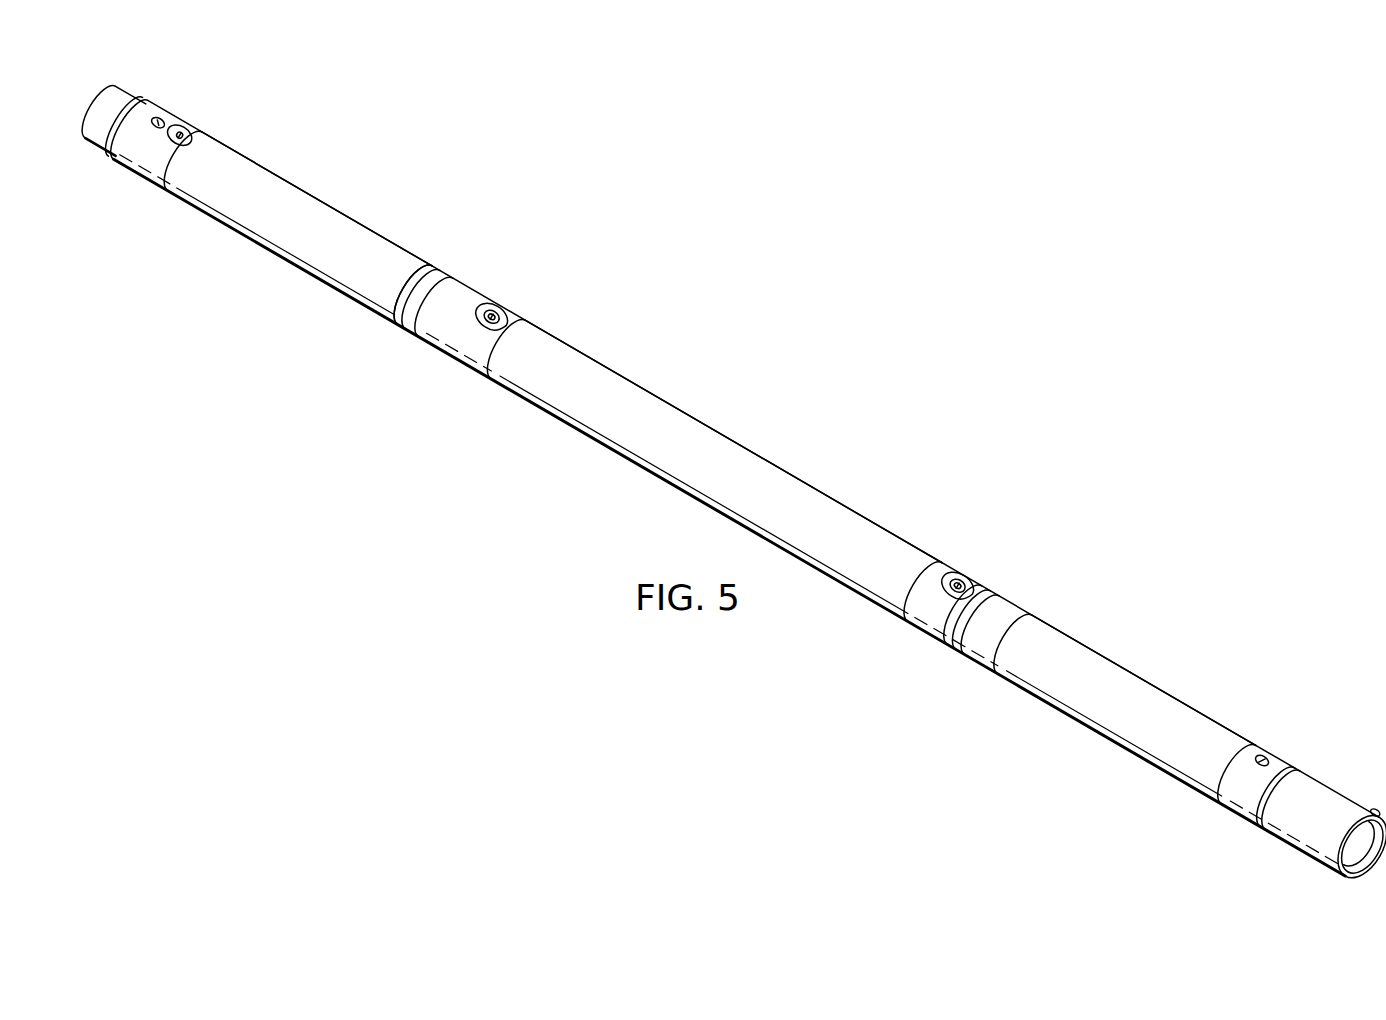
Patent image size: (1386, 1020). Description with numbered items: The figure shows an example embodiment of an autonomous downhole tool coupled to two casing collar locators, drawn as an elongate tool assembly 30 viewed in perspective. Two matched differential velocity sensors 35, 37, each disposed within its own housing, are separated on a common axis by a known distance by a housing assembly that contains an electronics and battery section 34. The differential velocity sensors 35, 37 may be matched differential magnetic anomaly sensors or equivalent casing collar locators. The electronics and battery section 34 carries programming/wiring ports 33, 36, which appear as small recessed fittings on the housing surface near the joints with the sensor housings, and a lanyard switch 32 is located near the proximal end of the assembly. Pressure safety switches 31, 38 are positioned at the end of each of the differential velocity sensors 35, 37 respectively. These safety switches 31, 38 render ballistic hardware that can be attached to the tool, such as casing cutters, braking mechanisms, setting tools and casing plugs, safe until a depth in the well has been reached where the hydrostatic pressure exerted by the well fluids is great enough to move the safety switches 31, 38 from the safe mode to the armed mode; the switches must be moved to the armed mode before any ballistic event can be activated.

The tool assembly 30 is at (774, 299).
The pressure safety switch 31 is at (162, 118).
The lanyard switch 32 is at (185, 130).
The programming/wiring port 33 is at (494, 313).
The electronics and battery section 34 is at (740, 446).
The differential velocity sensor 35 is at (322, 200).
The programming/wiring port 36 is at (959, 582).
The differential velocity sensor 37 is at (1143, 676).
The pressure safety switch 38 is at (1260, 758).